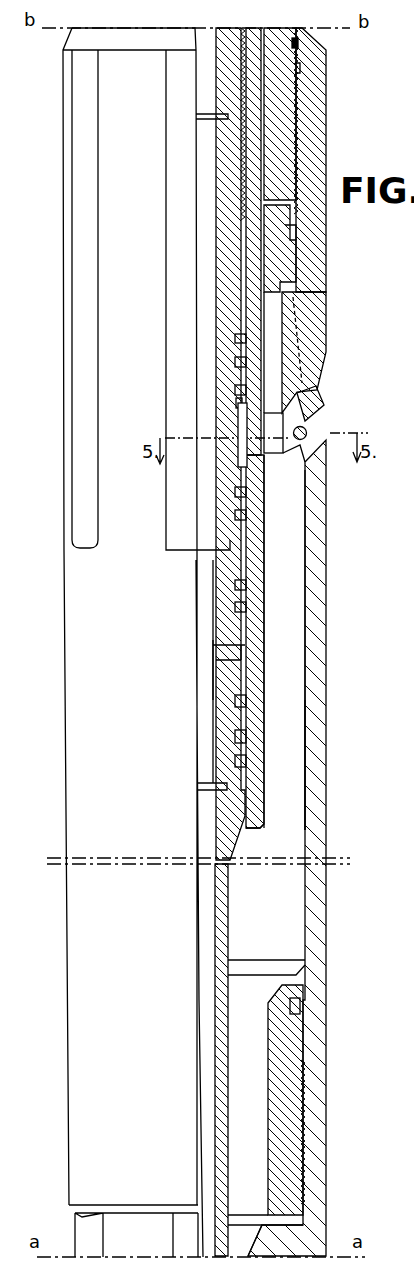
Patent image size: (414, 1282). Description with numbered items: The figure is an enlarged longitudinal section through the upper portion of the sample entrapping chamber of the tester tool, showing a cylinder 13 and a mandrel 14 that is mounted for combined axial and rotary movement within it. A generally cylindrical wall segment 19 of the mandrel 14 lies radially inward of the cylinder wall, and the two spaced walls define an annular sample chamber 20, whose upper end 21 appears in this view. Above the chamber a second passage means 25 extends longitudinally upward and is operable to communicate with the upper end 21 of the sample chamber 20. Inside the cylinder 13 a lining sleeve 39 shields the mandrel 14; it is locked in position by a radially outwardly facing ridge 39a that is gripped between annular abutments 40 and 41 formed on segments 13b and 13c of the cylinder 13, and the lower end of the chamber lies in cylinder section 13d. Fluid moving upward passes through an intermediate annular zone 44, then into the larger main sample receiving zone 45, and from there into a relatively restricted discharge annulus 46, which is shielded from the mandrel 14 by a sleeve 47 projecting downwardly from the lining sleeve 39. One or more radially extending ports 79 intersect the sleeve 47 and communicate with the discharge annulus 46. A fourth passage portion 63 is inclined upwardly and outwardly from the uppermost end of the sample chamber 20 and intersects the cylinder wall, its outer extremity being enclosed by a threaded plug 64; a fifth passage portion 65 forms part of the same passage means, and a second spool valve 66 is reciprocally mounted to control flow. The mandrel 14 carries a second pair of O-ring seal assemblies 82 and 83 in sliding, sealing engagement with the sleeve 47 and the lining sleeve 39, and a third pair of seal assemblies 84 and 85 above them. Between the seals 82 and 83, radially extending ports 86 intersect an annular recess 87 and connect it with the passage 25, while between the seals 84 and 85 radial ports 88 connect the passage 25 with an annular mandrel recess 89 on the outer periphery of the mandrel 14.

The cylinder 13 is at (328, 607).
The cylinder segment 13b is at (285, 87).
The cylinder segment 13c is at (310, 172).
The cylinder section 13d is at (307, 1230).
The mandrel 14 is at (228, 78).
The cylindrical wall segment 19 is at (223, 942).
The sample chamber 20 is at (278, 916).
The upper end of sample chamber 21 is at (285, 758).
The second passage means 25 is at (205, 277).
The lining sleeve 39 is at (253, 133).
The radially outwardly facing ridge 39a is at (288, 263).
The annular abutment 40 is at (290, 231).
The annular abutment 41 is at (310, 295).
The intermediate annular zone 44 is at (253, 1105).
The main sample receiving zone 45 is at (295, 833).
The discharge annulus 46 is at (317, 641).
The sleeve 47 is at (257, 672).
The fourth passage portion 63 is at (295, 460).
The threaded plug 64 is at (318, 393).
The fifth passage portion 65 is at (302, 452).
The second spool valve 66 is at (310, 425).
The radially extending ports 79 is at (270, 470).
The O-ring seal assembly 82 is at (233, 598).
The O-ring seal assembly 83 is at (230, 722).
The O-ring seal assembly 84 is at (237, 328).
The O-ring seal assembly 85 is at (230, 508).
The radially extending ports 86 is at (227, 665).
The annular recess 87 is at (243, 646).
The radial ports 88 is at (233, 427).
The annular mandrel recess 89 is at (240, 410).